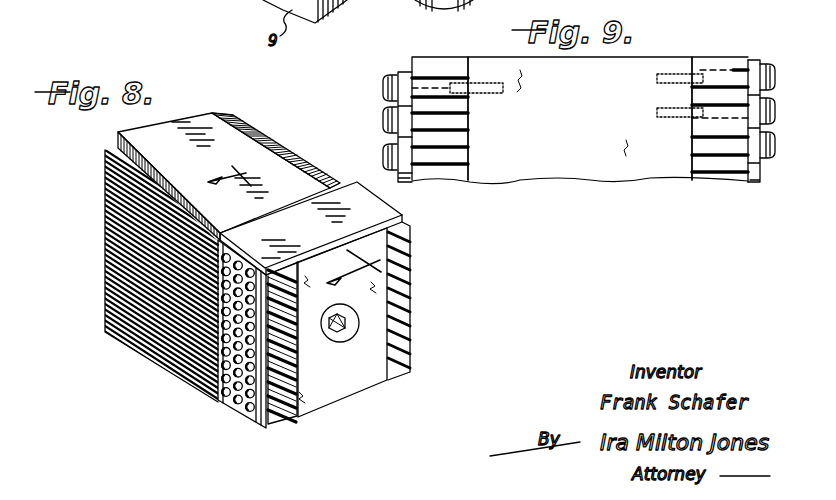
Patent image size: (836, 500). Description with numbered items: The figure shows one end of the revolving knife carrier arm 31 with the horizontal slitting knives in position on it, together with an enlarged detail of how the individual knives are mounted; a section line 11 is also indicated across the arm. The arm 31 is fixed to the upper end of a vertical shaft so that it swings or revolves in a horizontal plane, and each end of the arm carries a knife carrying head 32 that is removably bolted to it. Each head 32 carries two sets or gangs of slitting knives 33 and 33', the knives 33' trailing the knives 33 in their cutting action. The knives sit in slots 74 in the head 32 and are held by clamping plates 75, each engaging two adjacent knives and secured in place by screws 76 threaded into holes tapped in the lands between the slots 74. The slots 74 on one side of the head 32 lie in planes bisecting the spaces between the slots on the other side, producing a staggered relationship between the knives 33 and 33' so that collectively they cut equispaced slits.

In FIG. 8, the arm 31 is at (202, 124).
In FIG. 8, the section line 11 is at (300, 222).
In FIG. 8, the knife carrying head 32 is at (367, 376).
In FIG. 9, the knife carrying head 32 is at (648, 66).
In FIG. 8, the slitting knives 33 is at (422, 301).
In FIG. 9, the slitting knives 33 is at (667, 134).
In FIG. 8, the slitting knives 33' is at (303, 356).
In FIG. 9, the slitting knives 33' is at (492, 134).
In FIG. 8, the slots 74 is at (290, 276).
In FIG. 9, the slots 74 is at (456, 80).
In FIG. 8, the retaining bar 75 is at (238, 256).
In FIG. 9, the retaining bar 75 is at (403, 72).
In FIG. 8, the screws 76 is at (247, 418).
In FIG. 9, the screws 76 is at (382, 117).